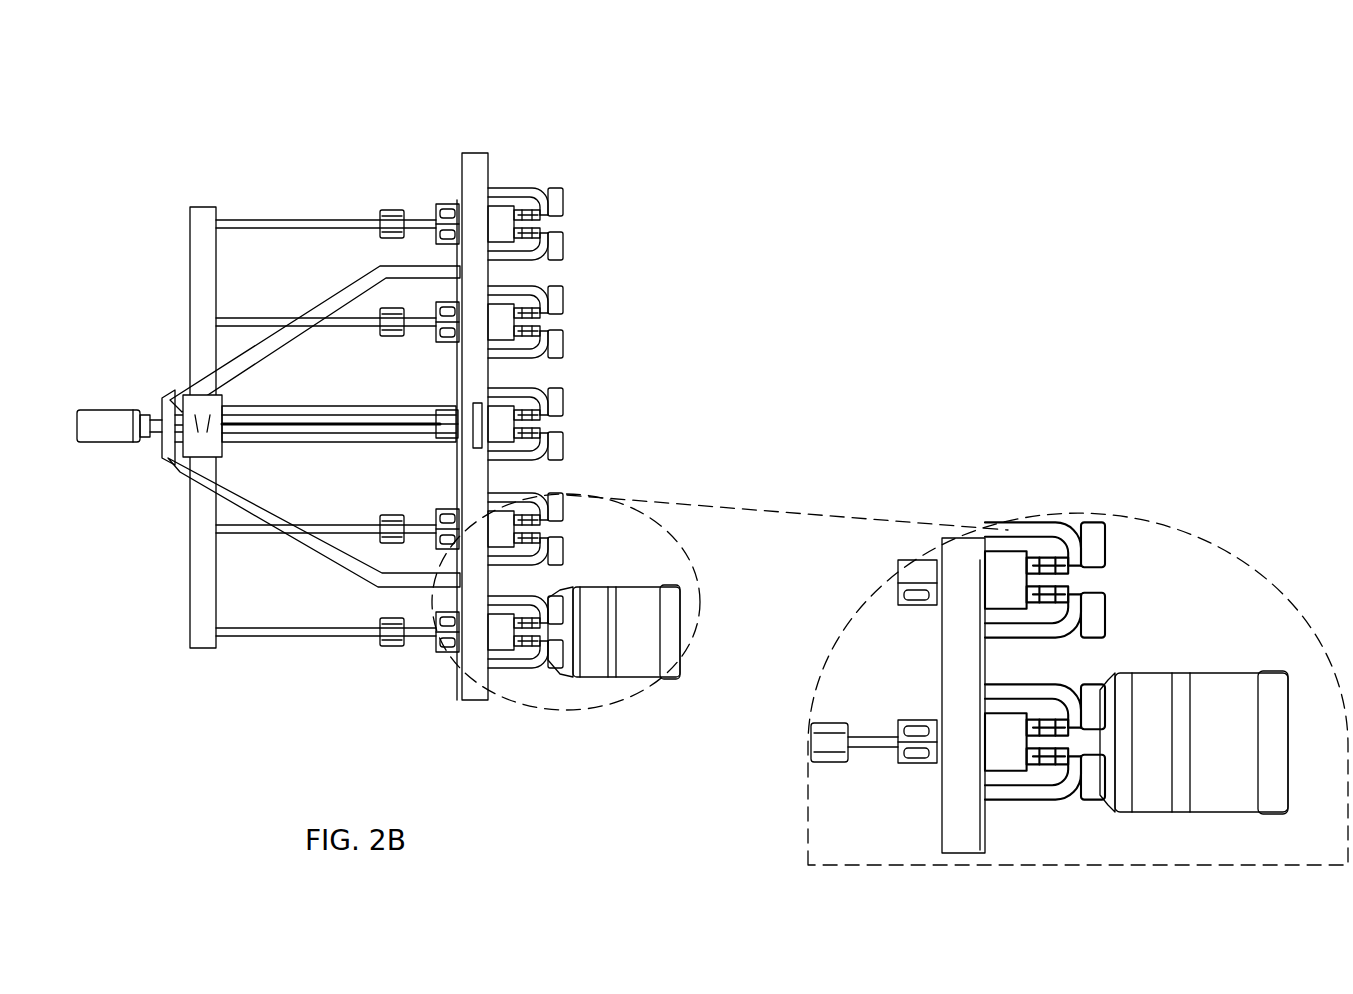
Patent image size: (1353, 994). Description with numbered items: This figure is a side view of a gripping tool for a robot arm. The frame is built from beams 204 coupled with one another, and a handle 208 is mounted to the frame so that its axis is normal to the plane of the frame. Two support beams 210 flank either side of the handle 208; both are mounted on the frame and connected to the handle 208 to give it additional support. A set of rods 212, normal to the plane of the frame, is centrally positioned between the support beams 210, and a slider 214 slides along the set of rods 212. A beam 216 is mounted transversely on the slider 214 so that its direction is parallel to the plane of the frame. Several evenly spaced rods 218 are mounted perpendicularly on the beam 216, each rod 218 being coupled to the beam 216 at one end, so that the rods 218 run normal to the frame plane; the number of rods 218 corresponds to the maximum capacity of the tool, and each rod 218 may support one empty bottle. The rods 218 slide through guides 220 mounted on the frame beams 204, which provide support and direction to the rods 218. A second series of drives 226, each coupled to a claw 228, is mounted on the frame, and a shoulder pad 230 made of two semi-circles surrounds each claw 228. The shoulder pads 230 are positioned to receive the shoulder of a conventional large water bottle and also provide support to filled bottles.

The beam 204 is at (480, 153).
The handle 208 is at (95, 450).
The support beam 210 is at (302, 548).
The set of rods 212 is at (352, 447).
The slider 214 is at (178, 460).
The beam 216 is at (188, 300).
The rod 218 is at (297, 212).
The guide 220 is at (393, 206).
The drive 226 is at (505, 187).
The claw 228 is at (528, 205).
The shoulder pad 230 is at (565, 202).